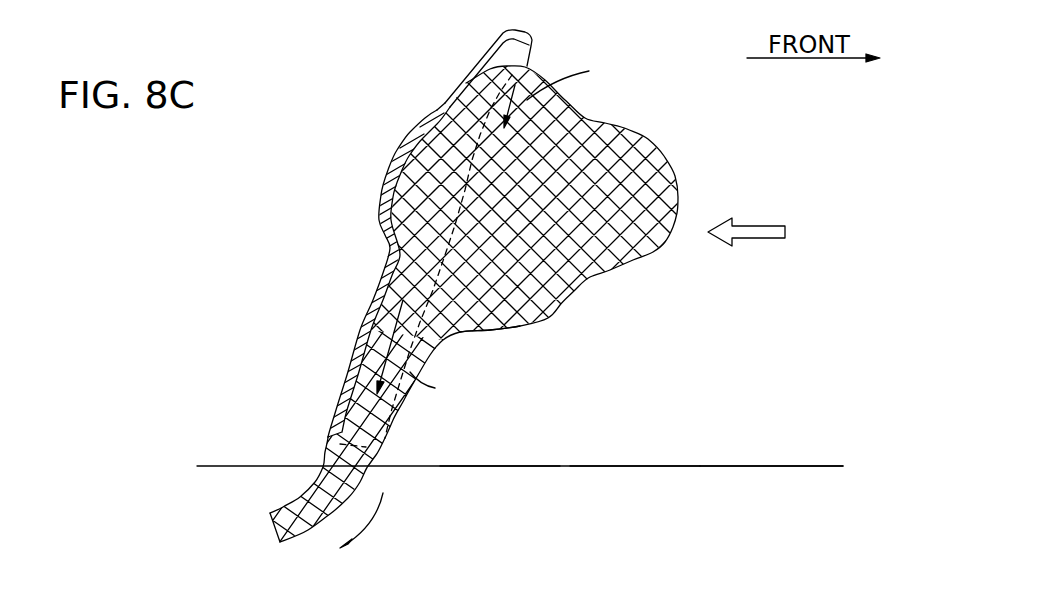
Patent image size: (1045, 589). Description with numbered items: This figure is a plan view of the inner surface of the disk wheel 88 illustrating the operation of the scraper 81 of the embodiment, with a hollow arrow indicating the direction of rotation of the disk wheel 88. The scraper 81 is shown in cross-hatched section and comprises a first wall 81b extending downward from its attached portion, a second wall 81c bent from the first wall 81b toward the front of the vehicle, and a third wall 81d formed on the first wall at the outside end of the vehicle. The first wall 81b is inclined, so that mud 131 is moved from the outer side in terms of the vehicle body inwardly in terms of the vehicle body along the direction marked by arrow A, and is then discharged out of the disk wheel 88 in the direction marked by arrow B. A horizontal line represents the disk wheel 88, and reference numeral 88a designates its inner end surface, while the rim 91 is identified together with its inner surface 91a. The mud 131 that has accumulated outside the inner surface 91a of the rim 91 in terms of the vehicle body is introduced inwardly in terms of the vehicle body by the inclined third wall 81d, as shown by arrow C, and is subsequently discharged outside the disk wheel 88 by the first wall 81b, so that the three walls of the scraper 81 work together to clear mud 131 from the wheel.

The scraper 81 is at (340, 134).
The first wall 81b is at (373, 285).
The second wall 81c is at (495, 330).
The third wall 81d is at (503, 56).
The mud 131 is at (637, 157).
The rim 91 is at (212, 476).
The inner surface of the rim 91a is at (525, 438).
The disk wheel 88 is at (769, 482).
The inner end surface of the disk wheel 88a is at (615, 468).